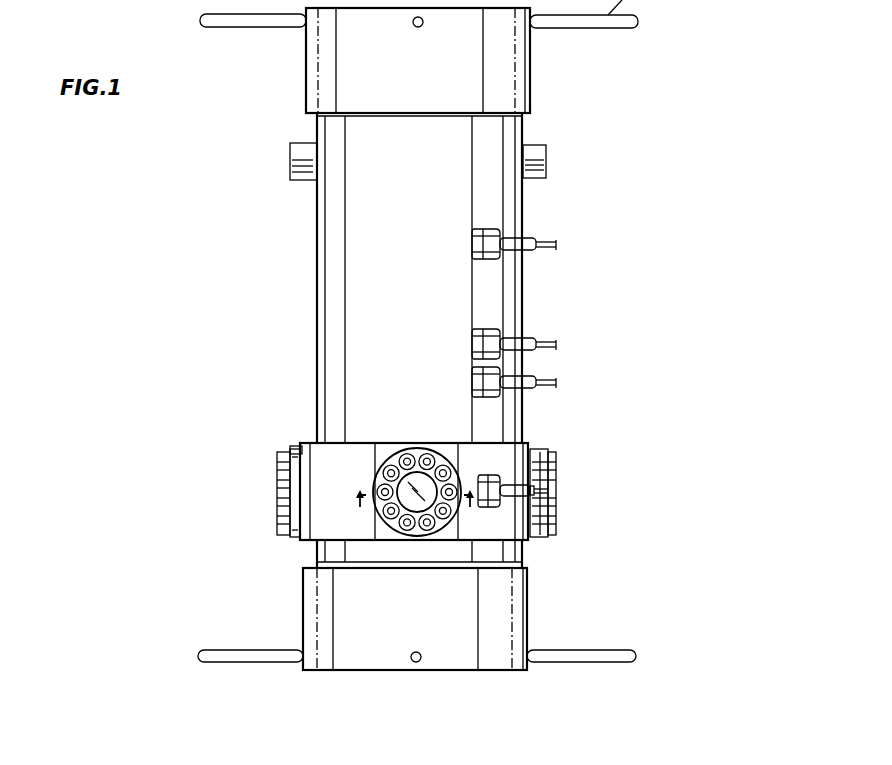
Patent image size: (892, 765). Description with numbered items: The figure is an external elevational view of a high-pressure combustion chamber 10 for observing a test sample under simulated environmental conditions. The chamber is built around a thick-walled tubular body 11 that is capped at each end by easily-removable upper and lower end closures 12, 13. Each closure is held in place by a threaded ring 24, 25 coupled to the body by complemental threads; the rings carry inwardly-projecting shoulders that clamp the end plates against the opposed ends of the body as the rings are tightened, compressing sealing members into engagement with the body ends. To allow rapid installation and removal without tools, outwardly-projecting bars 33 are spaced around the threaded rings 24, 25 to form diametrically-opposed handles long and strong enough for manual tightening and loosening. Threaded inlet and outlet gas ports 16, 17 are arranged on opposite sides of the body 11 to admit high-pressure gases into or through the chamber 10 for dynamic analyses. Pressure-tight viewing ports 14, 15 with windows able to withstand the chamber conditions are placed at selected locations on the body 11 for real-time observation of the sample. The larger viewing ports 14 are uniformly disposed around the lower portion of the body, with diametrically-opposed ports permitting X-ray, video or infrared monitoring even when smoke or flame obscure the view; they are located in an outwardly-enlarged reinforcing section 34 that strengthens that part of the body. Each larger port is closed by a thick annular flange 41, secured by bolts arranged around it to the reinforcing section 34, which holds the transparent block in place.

The high-pressure combustion chamber 10 is at (271, 236).
The thick-walled tubular body 11 is at (330, 354).
The upper end closure 12 is at (538, 83).
The lower end closure 13 is at (538, 601).
The larger viewing port 14 is at (256, 511).
The viewing port 15 is at (504, 229).
The threaded inlet gas port 16 is at (291, 160).
The threaded outlet gas port 17 is at (546, 153).
The upper threaded ring 24 is at (320, 61).
The lower threaded ring 25 is at (310, 612).
The outwardly-projecting bar 33 is at (230, 665).
The outwardly-enlarged reinforcing section 34 is at (493, 455).
The thick annular flange 41 is at (295, 450).